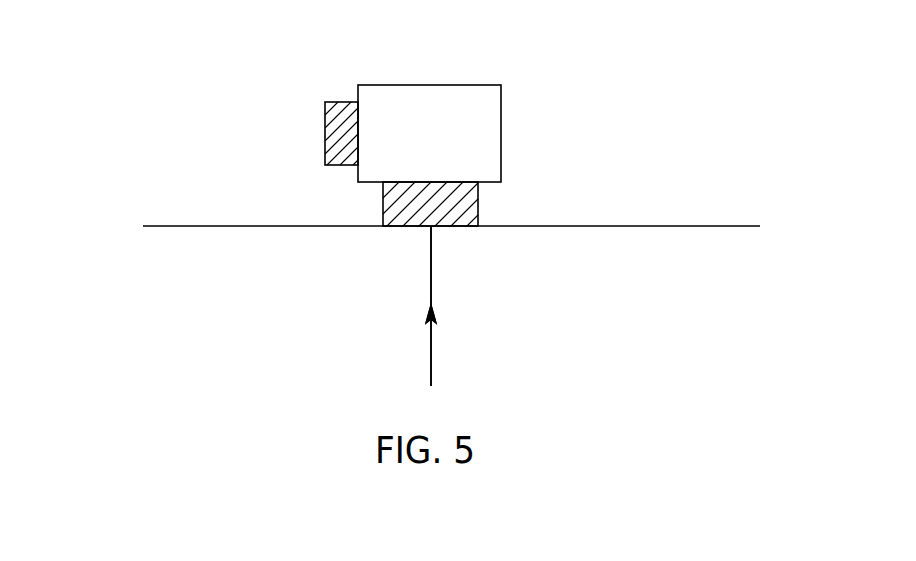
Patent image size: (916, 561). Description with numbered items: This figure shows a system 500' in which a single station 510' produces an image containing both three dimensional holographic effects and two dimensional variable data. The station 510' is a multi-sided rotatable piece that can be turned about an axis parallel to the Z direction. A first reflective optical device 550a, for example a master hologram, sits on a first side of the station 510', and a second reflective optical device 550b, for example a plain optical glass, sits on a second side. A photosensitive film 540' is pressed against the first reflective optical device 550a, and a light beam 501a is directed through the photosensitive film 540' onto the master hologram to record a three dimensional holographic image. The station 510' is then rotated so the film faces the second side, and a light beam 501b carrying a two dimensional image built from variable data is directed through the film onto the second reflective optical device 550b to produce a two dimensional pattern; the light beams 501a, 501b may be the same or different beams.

The system 500' is at (834, 68).
The station 510' is at (429, 104).
The photosensitive film 540' is at (451, 197).
The first reflective optical device 550a is at (478, 203).
The second reflective optical device 550b is at (325, 128).
The light beam 501a is at (433, 286).
The light beam 501b is at (431, 306).